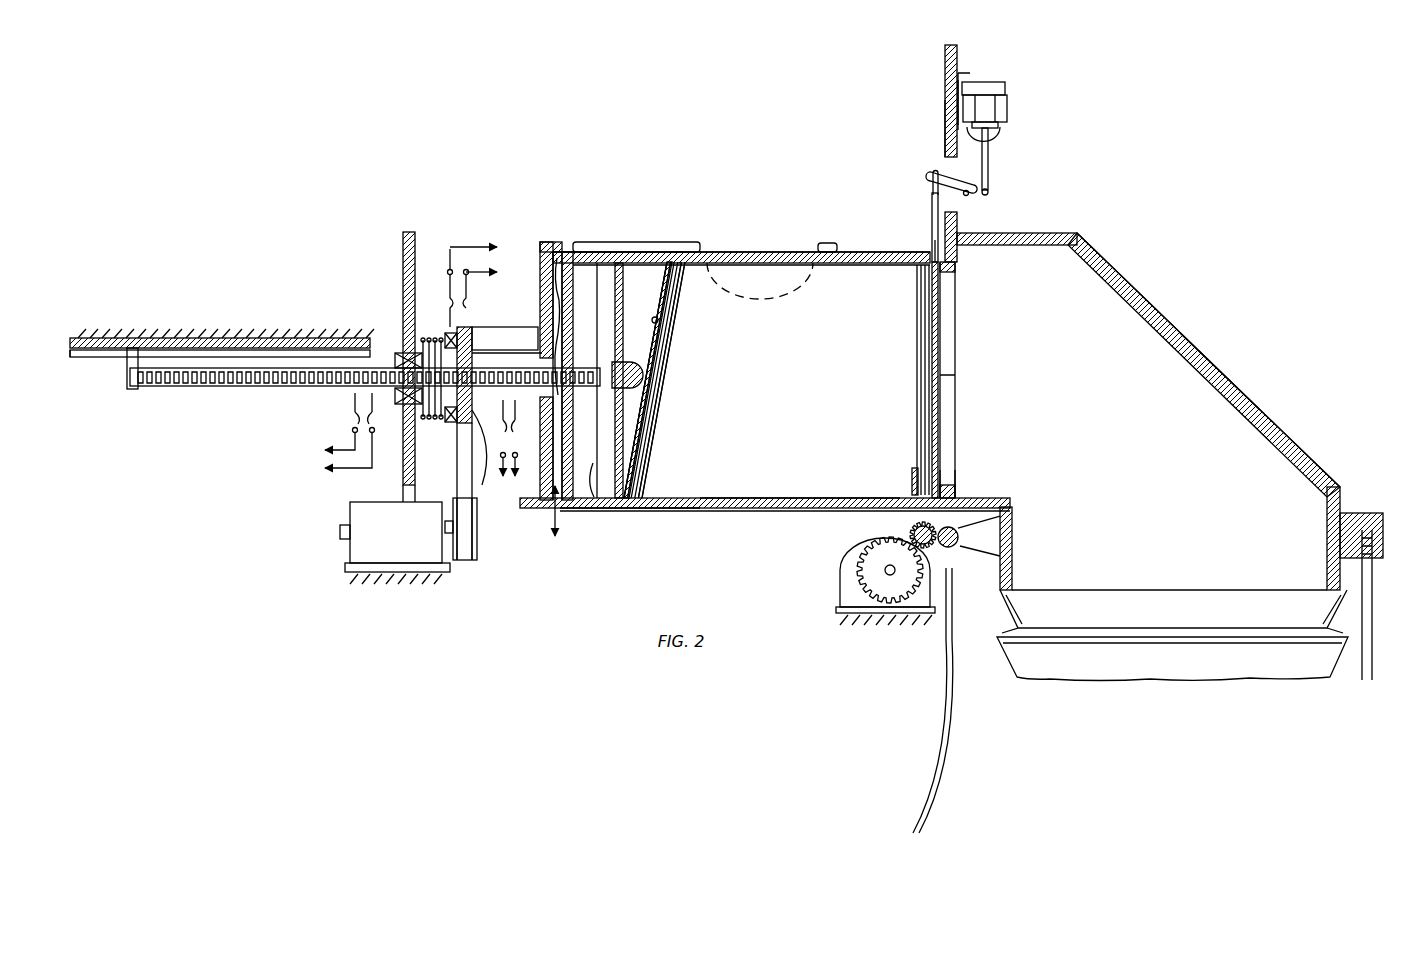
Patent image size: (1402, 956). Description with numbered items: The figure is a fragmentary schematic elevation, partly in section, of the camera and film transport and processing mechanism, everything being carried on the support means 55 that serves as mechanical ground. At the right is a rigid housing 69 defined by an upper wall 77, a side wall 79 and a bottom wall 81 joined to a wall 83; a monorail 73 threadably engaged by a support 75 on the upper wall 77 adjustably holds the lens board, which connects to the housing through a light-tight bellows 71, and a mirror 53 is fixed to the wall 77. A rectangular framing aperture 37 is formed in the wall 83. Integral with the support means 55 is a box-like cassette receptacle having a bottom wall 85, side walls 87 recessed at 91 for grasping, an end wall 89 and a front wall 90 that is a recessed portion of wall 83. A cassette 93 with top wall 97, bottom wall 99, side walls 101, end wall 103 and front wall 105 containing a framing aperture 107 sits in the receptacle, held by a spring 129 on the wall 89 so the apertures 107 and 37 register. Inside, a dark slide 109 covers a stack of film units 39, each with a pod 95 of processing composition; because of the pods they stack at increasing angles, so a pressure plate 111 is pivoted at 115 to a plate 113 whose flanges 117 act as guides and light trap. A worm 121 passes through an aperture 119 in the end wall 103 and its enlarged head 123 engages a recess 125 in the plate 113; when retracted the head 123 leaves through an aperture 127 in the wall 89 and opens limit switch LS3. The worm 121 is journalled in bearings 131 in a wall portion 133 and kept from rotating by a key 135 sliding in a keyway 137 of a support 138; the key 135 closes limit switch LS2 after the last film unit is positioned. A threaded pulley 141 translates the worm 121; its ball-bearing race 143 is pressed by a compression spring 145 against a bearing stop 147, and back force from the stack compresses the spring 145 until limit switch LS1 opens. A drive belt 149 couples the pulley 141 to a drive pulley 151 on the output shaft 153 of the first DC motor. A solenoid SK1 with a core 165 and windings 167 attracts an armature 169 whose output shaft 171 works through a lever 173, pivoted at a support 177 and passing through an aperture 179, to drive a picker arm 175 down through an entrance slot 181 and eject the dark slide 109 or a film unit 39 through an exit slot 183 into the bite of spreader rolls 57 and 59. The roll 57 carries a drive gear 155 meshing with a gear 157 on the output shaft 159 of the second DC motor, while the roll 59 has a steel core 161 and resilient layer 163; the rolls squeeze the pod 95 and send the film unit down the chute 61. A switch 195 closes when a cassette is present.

The framing aperture 37 is at (958, 272).
The film units 39 is at (668, 386).
The mirror 53 is at (1192, 368).
The support means 55 is at (628, 506).
The spreader roll 57 is at (912, 535).
The spreader roll 59 is at (957, 549).
The chute 61 is at (941, 768).
The housing 69 is at (1270, 412).
The bellows 71 is at (1010, 670).
The monorail 73 is at (1362, 670).
The support 75 is at (1372, 513).
The upper wall 77 is at (1325, 456).
The side wall 79 is at (1137, 328).
The bottom wall 81 is at (1005, 507).
The wall 83 is at (945, 152).
The bottom wall 85 is at (765, 508).
The side walls 87 is at (615, 252).
The end wall 89 is at (545, 242).
The front wall 90 is at (918, 268).
The recess 91 is at (700, 245).
The cassette 93 is at (645, 250).
The pod 95 is at (912, 481).
The top wall 97 is at (828, 243).
The bottom wall 99 is at (780, 498).
The side walls 101 is at (655, 291).
The end wall 103 is at (572, 254).
The front wall 105 is at (955, 470).
The framing aperture 107 is at (955, 283).
The dark slide 109 is at (956, 372).
The pressure plate 111 is at (680, 318).
The plate 113 is at (622, 312).
The pivot connection 115 is at (634, 361).
The flanges 117 is at (591, 500).
The aperture 119 is at (538, 338).
The worm 121 is at (246, 387).
The head 123 is at (648, 428).
The recess 125 is at (640, 453).
The aperture 127 is at (540, 354).
The spring 129 is at (557, 292).
The bearings 131 is at (400, 352).
The wall portion 133 is at (403, 242).
The key 135 is at (128, 380).
The keyway 137 is at (87, 366).
The support 138 is at (222, 348).
The pulley 141 is at (492, 455).
The ball-bearing race 143 is at (447, 422).
The compression spring 145 is at (432, 335).
The bearing stop 147 is at (478, 325).
The drive belt 149 is at (457, 486).
The drive pulley 151 is at (477, 552).
The output shaft 153 is at (340, 530).
The drive gear 155 is at (930, 610).
The gear 157 is at (880, 573).
The output shaft 159 is at (892, 576).
The core 161 is at (985, 531).
The resilient layer 163 is at (962, 541).
The core 165 is at (997, 82).
The windings 167 is at (1008, 113).
The armature 169 is at (1000, 138).
The output shaft 171 is at (990, 171).
The lever 173 is at (930, 175).
The picker arm 175 is at (932, 216).
The support 177 is at (968, 195).
The aperture 179 is at (932, 172).
The entrance slot 181 is at (932, 255).
The exit slot 183 is at (958, 500).
The switch 195 is at (545, 526).
The limit switch LS1 is at (474, 287).
The limit switch LS2 is at (328, 430).
The limit switch LS3 is at (518, 432).
The solenoid SK1 is at (1012, 101).